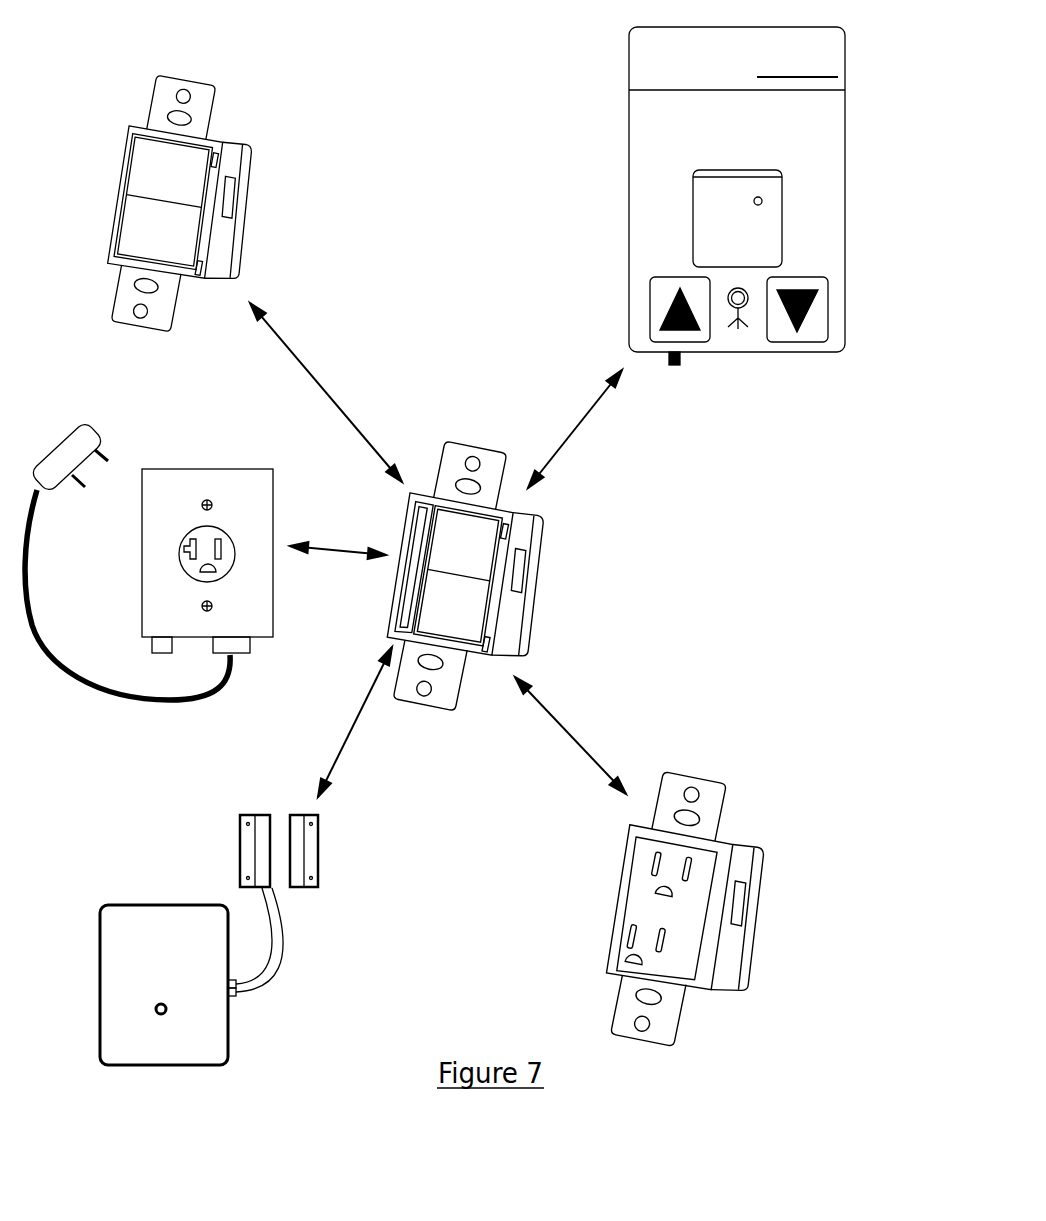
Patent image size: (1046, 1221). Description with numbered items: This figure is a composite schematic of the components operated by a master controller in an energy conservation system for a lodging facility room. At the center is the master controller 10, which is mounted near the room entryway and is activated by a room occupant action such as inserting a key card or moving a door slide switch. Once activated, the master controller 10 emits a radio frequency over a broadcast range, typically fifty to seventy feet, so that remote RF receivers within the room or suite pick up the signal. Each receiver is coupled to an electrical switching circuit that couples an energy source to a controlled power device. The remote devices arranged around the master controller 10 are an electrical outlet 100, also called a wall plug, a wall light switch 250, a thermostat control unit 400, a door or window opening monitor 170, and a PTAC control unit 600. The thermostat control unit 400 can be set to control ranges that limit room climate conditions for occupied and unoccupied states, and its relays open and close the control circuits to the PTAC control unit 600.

The wall light switch 250 is at (268, 142).
The thermostat control unit 400 is at (618, 70).
The PTAC control unit 600 is at (258, 456).
The master controller 10 is at (553, 498).
The door or window opening monitor 170 is at (180, 860).
The electrical outlet 100 is at (793, 818).